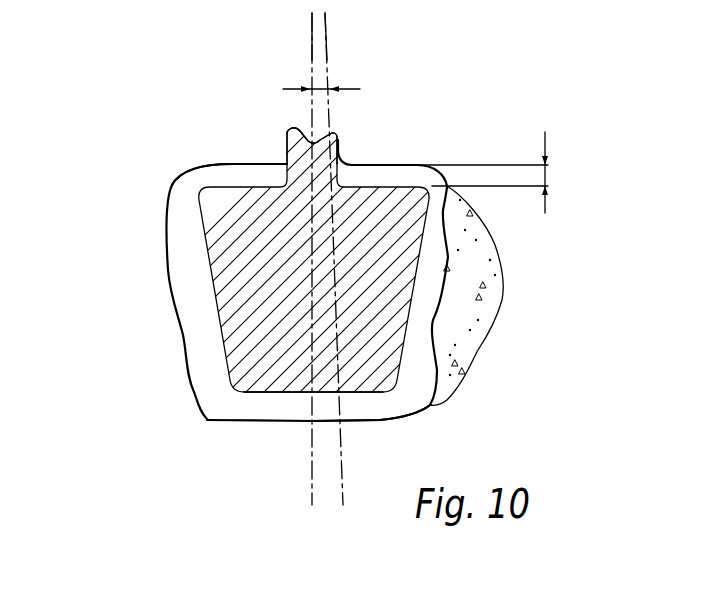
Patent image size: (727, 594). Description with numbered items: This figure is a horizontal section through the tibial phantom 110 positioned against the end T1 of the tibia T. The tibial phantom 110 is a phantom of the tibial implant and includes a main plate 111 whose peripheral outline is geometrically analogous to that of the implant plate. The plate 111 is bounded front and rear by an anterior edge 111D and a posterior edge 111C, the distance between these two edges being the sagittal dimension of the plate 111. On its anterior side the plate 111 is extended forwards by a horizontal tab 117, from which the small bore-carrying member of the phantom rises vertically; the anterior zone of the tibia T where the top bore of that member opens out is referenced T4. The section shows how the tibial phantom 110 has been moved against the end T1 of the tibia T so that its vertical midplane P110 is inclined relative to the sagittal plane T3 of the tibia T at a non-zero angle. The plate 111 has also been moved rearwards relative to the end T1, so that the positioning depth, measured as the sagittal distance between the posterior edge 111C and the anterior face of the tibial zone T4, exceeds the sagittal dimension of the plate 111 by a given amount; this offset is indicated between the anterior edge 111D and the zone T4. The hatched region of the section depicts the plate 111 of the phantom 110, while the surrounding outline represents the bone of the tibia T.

The tibial phantom 110 is at (199, 274).
The main plate 111 is at (238, 318).
The posterior edge 111C is at (288, 402).
The anterior edge 111D is at (236, 177).
The horizontal tab 117 is at (338, 147).
The tibia T is at (174, 370).
The end of the tibia T1 is at (295, 401).
The sagittal plane of the tibia T3 is at (327, 38).
The anterior zone of the tibia T4 is at (287, 132).
The vertical midplane of the plate P110 is at (310, 40).
The mold / surrounding material M is at (467, 325).